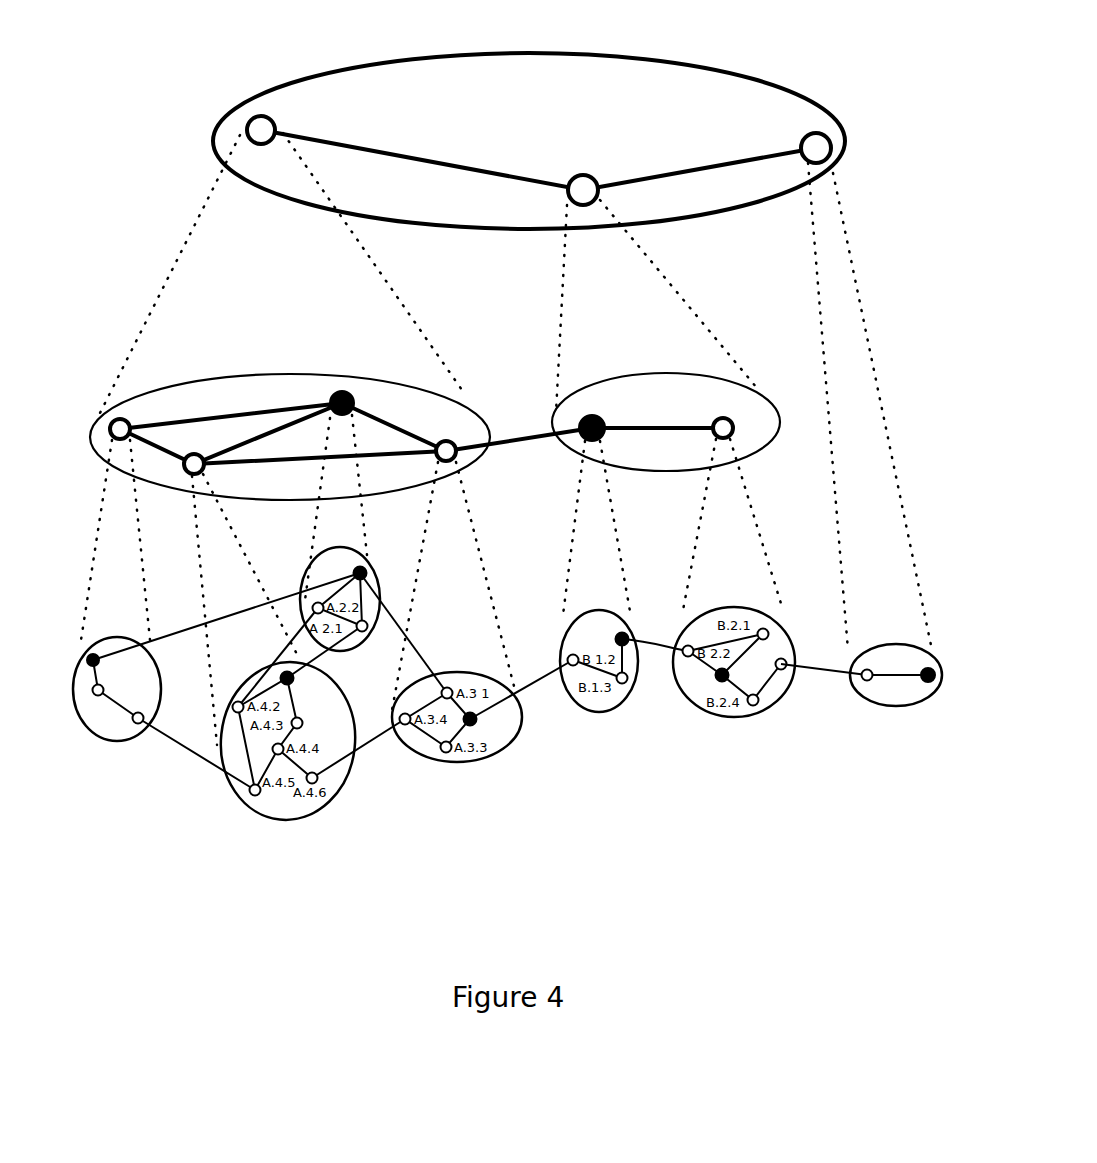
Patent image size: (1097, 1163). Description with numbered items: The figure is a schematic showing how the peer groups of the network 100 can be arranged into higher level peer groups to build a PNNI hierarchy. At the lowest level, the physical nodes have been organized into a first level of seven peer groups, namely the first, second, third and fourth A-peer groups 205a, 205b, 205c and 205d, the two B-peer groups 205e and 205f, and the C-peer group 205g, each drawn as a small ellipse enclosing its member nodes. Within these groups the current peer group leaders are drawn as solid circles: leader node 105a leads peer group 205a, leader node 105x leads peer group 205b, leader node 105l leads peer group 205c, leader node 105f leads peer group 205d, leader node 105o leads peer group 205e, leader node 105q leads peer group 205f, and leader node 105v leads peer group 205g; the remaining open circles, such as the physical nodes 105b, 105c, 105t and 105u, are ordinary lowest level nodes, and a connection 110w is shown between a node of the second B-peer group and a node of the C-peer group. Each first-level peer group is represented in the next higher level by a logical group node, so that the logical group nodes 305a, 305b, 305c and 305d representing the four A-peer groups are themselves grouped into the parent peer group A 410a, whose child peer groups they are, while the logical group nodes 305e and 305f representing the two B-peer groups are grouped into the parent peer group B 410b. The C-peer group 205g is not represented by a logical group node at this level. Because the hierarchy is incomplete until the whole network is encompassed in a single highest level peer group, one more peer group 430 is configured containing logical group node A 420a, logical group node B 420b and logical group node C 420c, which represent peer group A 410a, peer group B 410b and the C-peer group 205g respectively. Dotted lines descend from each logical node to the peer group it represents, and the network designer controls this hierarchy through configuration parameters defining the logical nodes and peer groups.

The network 100 is at (377, 823).
The highest level peer group 430 is at (334, 68).
The logical group node A 420a is at (248, 122).
The logical group node B 420b is at (570, 181).
The logical group node C 420c is at (802, 140).
The peer group A 410a is at (190, 385).
The peer group B 410b is at (745, 383).
The logical group node A.1 305a is at (110, 425).
The logical group node A.2 305b is at (332, 397).
The logical group node A.3 305c is at (452, 441).
The logical group node A.4 305d is at (205, 470).
The logical group node B.1 305e is at (582, 423).
The logical group node B.2 305f is at (712, 423).
The peer group A.1 205a is at (150, 715).
The peer group A.2 205b is at (300, 563).
The peer group A.3 205c is at (462, 758).
The peer group A.4 205d is at (252, 815).
The peer group B.1 205e is at (566, 632).
The peer group B.2 205f is at (748, 717).
The peer group C 205g is at (861, 650).
The node A.1.3 105a is at (88, 655).
The physical node 105b is at (92, 700).
The physical node 105c is at (137, 724).
The node A.4.1 105f is at (296, 678).
The node A.2.3 105x is at (365, 567).
The node A.3.2 105l is at (478, 726).
The node B.1.1 105o is at (632, 637).
The node B.2.3 105q is at (725, 686).
The physical node 105t is at (789, 653).
The physical node 105u is at (868, 690).
The node C.2 105v is at (928, 688).
The link between B.2.5 and C.1 110w is at (830, 668).